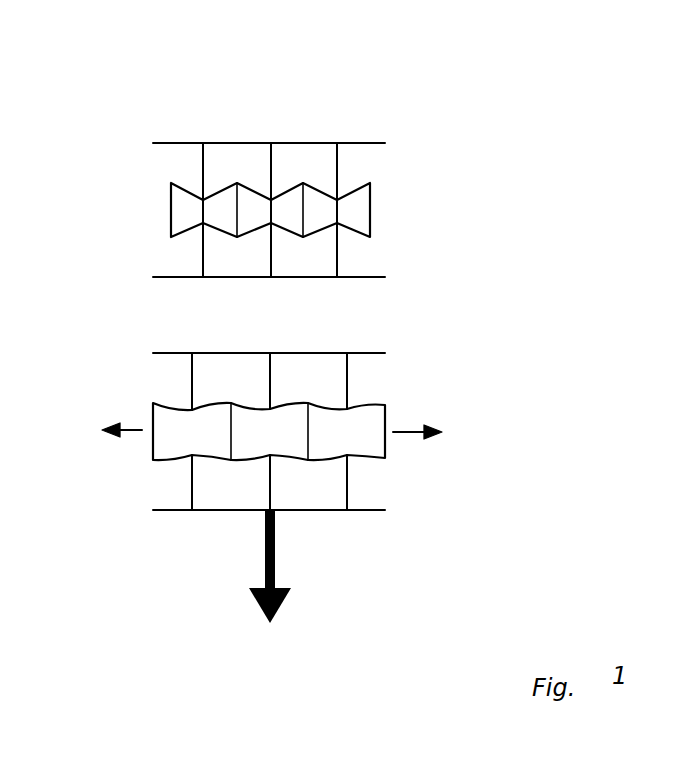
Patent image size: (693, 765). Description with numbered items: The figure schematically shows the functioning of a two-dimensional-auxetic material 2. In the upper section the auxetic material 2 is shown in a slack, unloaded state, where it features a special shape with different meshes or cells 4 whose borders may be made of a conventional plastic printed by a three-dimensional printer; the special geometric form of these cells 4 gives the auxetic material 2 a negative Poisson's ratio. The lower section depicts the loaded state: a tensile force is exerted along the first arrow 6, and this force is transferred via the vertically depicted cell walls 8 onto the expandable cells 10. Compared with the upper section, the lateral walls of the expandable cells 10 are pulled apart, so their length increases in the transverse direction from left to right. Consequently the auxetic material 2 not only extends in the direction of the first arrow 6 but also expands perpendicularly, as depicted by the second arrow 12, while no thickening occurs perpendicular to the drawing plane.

The two-dimensional-auxetic material 2 is at (299, 152).
The cells 4 is at (223, 158).
The first arrow 6 is at (272, 580).
The cell walls 8 is at (273, 380).
The expandable cells 10 is at (173, 433).
The second arrow 12 is at (112, 423).